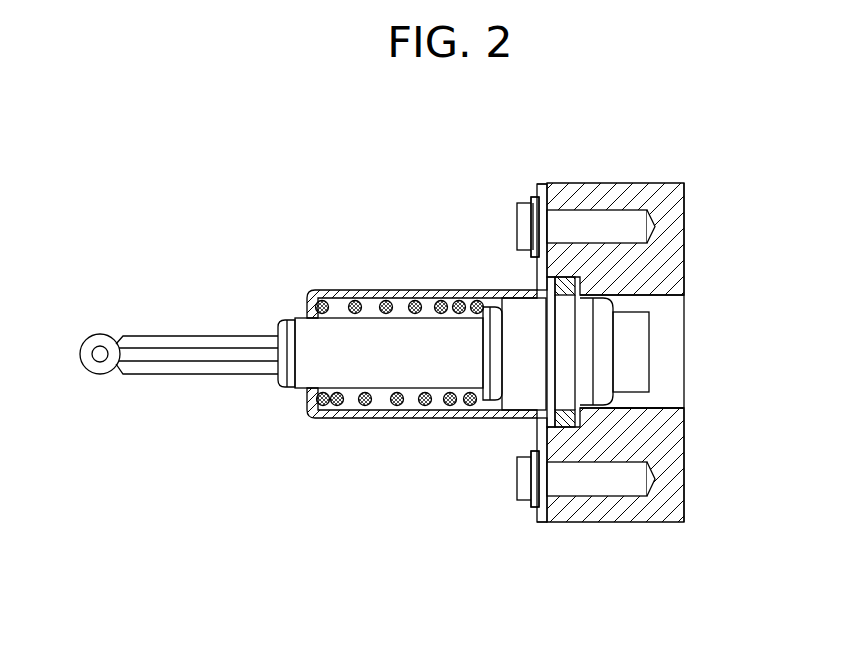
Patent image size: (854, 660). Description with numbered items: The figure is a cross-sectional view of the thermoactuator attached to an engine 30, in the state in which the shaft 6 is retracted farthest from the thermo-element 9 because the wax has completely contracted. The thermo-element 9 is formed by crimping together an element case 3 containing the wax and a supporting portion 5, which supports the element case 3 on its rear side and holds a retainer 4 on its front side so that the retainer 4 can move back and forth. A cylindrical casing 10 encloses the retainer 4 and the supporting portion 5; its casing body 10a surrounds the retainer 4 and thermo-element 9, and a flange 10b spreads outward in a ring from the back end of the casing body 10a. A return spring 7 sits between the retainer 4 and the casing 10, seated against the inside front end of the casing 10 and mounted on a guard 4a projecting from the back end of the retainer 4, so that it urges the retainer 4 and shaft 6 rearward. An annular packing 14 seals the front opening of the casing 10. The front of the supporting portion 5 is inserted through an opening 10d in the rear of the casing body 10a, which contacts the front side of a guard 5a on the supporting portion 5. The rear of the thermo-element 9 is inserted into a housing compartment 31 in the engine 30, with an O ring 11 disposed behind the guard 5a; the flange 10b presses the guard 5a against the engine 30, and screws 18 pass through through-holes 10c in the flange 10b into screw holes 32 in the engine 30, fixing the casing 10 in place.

The element case 3 is at (636, 352).
The retainer 4 is at (355, 372).
The guard 4a is at (482, 401).
The supporting portion 5 is at (505, 413).
The guard 5a is at (552, 310).
The shaft 6 is at (207, 376).
The return spring 7 is at (387, 300).
The thermo-element 9 is at (656, 305).
The casing 10 is at (431, 356).
The casing body 10a is at (350, 290).
The flange 10b is at (536, 200).
The through-holes 10c is at (539, 208).
The opening 10d is at (537, 420).
The O ring 11 is at (530, 243).
The annular packing 14 is at (297, 400).
The screws 18 is at (520, 242).
The engine 30 is at (638, 210).
The housing compartment 31 is at (648, 407).
The screw holes 32 is at (602, 232).